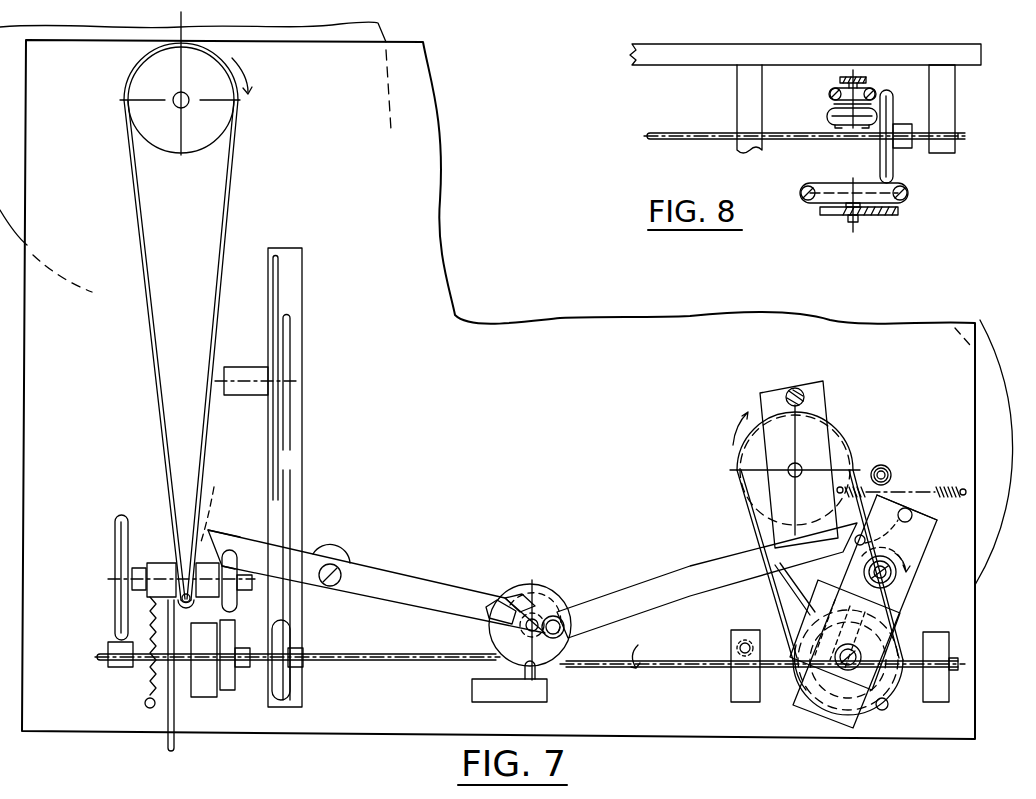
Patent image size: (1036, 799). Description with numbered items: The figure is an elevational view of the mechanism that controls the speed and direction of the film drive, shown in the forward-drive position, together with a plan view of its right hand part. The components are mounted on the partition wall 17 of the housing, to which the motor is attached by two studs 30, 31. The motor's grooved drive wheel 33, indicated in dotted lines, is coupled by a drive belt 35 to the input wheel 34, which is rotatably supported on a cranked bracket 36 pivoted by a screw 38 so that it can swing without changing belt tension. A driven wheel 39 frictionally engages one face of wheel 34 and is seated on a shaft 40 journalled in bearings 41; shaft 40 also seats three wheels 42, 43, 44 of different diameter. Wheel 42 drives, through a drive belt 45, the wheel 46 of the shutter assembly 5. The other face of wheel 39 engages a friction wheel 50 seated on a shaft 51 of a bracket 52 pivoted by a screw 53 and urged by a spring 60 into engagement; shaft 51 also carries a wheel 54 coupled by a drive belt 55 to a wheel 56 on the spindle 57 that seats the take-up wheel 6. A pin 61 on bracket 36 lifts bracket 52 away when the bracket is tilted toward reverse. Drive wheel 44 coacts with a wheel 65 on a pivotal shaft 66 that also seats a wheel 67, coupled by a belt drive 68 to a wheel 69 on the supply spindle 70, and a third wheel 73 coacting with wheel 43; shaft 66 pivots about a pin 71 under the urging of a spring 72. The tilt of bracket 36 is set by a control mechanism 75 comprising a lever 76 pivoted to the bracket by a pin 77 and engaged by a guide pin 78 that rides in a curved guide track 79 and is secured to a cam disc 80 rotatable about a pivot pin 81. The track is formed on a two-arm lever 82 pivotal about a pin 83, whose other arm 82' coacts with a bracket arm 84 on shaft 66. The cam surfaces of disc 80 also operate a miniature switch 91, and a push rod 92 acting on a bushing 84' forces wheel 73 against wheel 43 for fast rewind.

In FIG. 7, the shutter assembly 5 is at (303, 281).
In FIG. 7, the take-up wheel 6 is at (990, 408).
In FIG. 7, the partition wall 17 is at (538, 330).
In FIG. 8, the partition wall 17 is at (956, 55).
In FIG. 7, the stud 30 is at (885, 465).
In FIG. 7, the stud 31 is at (723, 636).
In FIG. 7, the drive wheel 33 is at (900, 576).
In FIG. 7, the wheel 34 is at (806, 650).
In FIG. 8, the wheel 34 is at (816, 204).
In FIG. 7, the drive belt 35 is at (900, 624).
In FIG. 8, the drive belt 35 is at (909, 189).
In FIG. 7, the cranked bracket 36 is at (805, 704).
In FIG. 8, the cranked bracket 36 is at (890, 215).
In FIG. 7, the screw 38 is at (892, 580).
In FIG. 8, the screw 38 is at (850, 222).
In FIG. 7, the driven wheel 39 is at (889, 707).
In FIG. 8, the driven wheel 39 is at (882, 150).
In FIG. 7, the shaft 40 is at (394, 661).
In FIG. 8, the shaft 40 is at (668, 130).
In FIG. 7, the bearings 41 is at (206, 690).
In FIG. 8, the bearings 41 is at (737, 85).
In FIG. 7, the wheel 42 is at (286, 686).
In FIG. 7, the wheel 43 is at (234, 682).
In FIG. 7, the drive wheel 44 is at (108, 658).
In FIG. 7, the drive belt 45 is at (284, 510).
In FIG. 7, the wheel 46 is at (288, 342).
In FIG. 7, the friction wheel 50 is at (810, 685).
In FIG. 8, the friction wheel 50 is at (828, 114).
In FIG. 8, the shaft 51 is at (860, 76).
In FIG. 7, the bracket 52 is at (762, 399).
In FIG. 8, the bracket 52 is at (848, 76).
In FIG. 7, the pivot screw 53 is at (800, 390).
In FIG. 8, the wheel 54 is at (873, 91).
In FIG. 7, the drive belt 55 is at (757, 523).
In FIG. 8, the drive belt 55 is at (829, 95).
In FIG. 7, the wheel 56 is at (752, 458).
In FIG. 7, the spindle 57 is at (805, 462).
In FIG. 7, the spring 60 is at (950, 488).
In FIG. 7, the pin 61 is at (922, 528).
In FIG. 7, the wheel 65 is at (119, 545).
In FIG. 7, the shaft 66 is at (138, 567).
In FIG. 7, the wheel 67 is at (193, 599).
In FIG. 7, the belt drive 68 is at (162, 368).
In FIG. 7, the wheel 69 is at (210, 122).
In FIG. 7, the spindle 70 is at (174, 97).
In FIG. 7, the pivot pin 71 is at (214, 505).
In FIG. 7, the spring 72 is at (146, 680).
In FIG. 7, the wheel 73 is at (240, 594).
In FIG. 7, the control mechanism 75 is at (527, 565).
In FIG. 7, the lever 76 is at (655, 590).
In FIG. 7, the pivot pin 77 is at (906, 508).
In FIG. 7, the guide pin 78 is at (560, 621).
In FIG. 7, the guide track 79 is at (520, 606).
In FIG. 7, the cam disc 80 is at (505, 636).
In FIG. 7, the pivot pin 81 is at (549, 600).
In FIG. 7, the two-arm lever 82 is at (376, 581).
In FIG. 7, the lever arm 82' is at (234, 541).
In FIG. 7, the pivot pin 83 is at (341, 553).
In FIG. 7, the bracket arm 84 is at (223, 540).
In FIG. 7, the bushing 84' is at (154, 544).
In FIG. 7, the miniature switch 91 is at (537, 690).
In FIG. 7, the push rod 92 is at (165, 738).